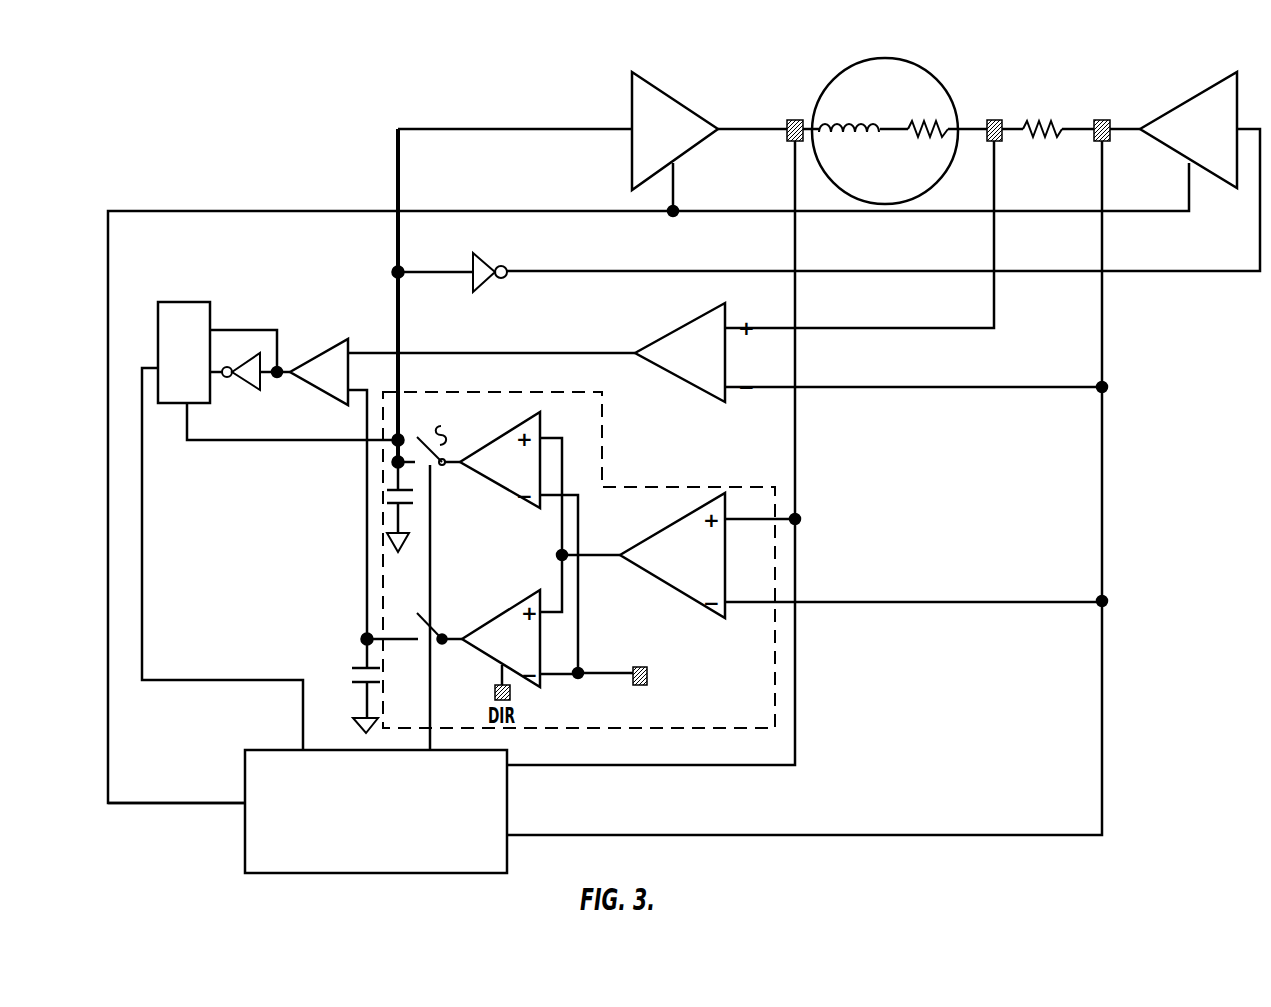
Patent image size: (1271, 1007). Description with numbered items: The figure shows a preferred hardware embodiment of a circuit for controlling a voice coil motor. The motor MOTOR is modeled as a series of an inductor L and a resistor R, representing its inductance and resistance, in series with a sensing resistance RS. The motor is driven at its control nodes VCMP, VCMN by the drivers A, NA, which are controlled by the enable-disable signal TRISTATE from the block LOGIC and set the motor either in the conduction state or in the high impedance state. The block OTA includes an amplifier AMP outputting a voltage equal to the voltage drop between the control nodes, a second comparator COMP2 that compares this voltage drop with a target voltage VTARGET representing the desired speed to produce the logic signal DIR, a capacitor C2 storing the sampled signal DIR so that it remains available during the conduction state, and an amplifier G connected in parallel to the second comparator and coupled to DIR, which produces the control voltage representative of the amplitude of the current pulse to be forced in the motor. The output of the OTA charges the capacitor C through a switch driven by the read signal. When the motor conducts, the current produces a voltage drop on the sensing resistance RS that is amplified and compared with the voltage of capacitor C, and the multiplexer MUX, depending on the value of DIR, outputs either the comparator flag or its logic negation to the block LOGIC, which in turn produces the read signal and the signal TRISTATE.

The driver A is at (675, 131).
The inverting driver −A NA is at (1188, 130).
The control node VCMP is at (771, 116).
The control node VCMN is at (1104, 116).
The inductor L is at (849, 150).
The resistor R is at (928, 149).
The sensing resistance RS is at (1042, 151).
The motor MOTOR is at (885, 117).
The multiplexer MUX is at (184, 337).
The logic signal DIR is at (426, 430).
The second comparator COMP2 is at (500, 460).
The target voltage VTARGET is at (657, 677).
The capacitor C2 is at (407, 507).
The block OTA is at (579, 560).
The amplifier AMP is at (672, 555).
The amplifier G is at (501, 638).
The capacitor C is at (368, 686).
The block LOGIC is at (376, 811).
The enable-disable signal TRISTATE is at (176, 792).